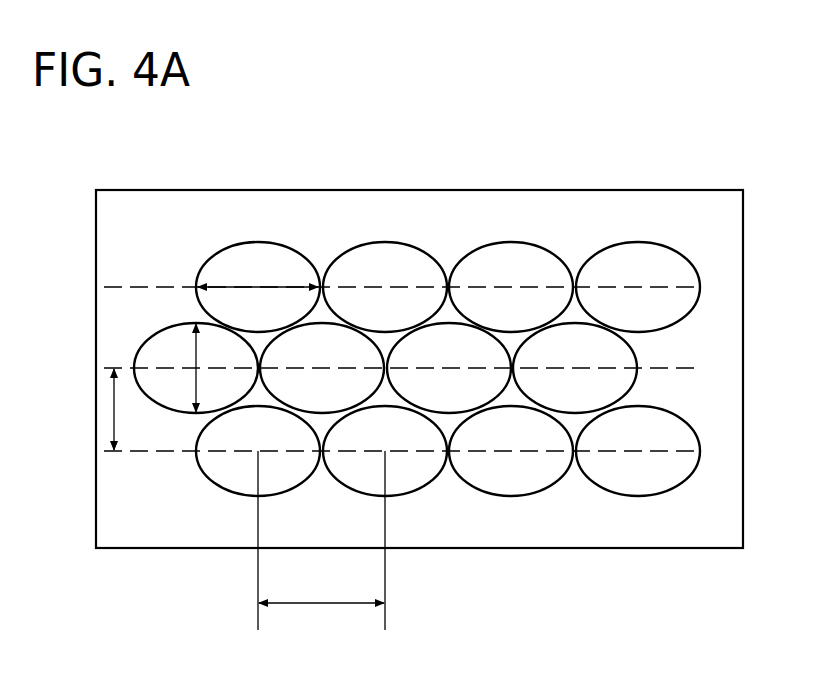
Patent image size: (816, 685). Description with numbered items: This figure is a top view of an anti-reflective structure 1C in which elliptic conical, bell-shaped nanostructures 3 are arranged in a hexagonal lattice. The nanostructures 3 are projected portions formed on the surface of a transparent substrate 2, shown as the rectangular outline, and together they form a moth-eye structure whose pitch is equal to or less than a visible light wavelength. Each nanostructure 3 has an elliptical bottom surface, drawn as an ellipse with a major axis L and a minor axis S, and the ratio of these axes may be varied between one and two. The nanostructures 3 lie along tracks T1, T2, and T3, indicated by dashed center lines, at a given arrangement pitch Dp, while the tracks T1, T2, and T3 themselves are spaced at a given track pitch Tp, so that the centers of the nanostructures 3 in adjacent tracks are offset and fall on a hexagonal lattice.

The anti-reflective structure 1C is at (697, 653).
The transparent substrate 2 is at (704, 206).
The nanostructures 3 is at (642, 258).
The track T1 is at (416, 451).
The track T2 is at (416, 368).
The track T3 is at (416, 287).